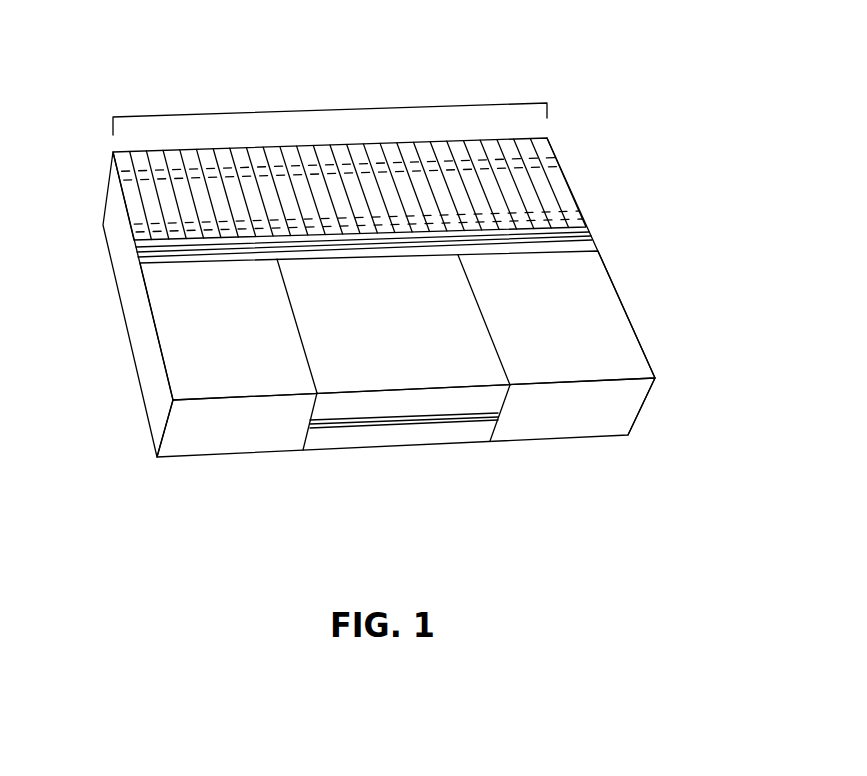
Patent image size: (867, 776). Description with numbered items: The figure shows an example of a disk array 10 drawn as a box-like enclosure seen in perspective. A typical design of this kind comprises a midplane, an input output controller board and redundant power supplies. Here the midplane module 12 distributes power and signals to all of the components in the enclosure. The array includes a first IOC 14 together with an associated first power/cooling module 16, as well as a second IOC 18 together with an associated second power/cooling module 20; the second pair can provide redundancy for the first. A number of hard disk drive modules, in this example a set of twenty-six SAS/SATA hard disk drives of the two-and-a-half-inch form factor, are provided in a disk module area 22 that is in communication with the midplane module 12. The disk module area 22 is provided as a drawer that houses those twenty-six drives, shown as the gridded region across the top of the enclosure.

The disk array 10 is at (607, 66).
The midplane module 12 is at (140, 262).
The first IOC 14 is at (435, 347).
The first power/cooling module 16 is at (650, 360).
The second IOC 18 is at (415, 433).
The second power/cooling module 20 is at (240, 453).
The disk module area 22 is at (330, 108).